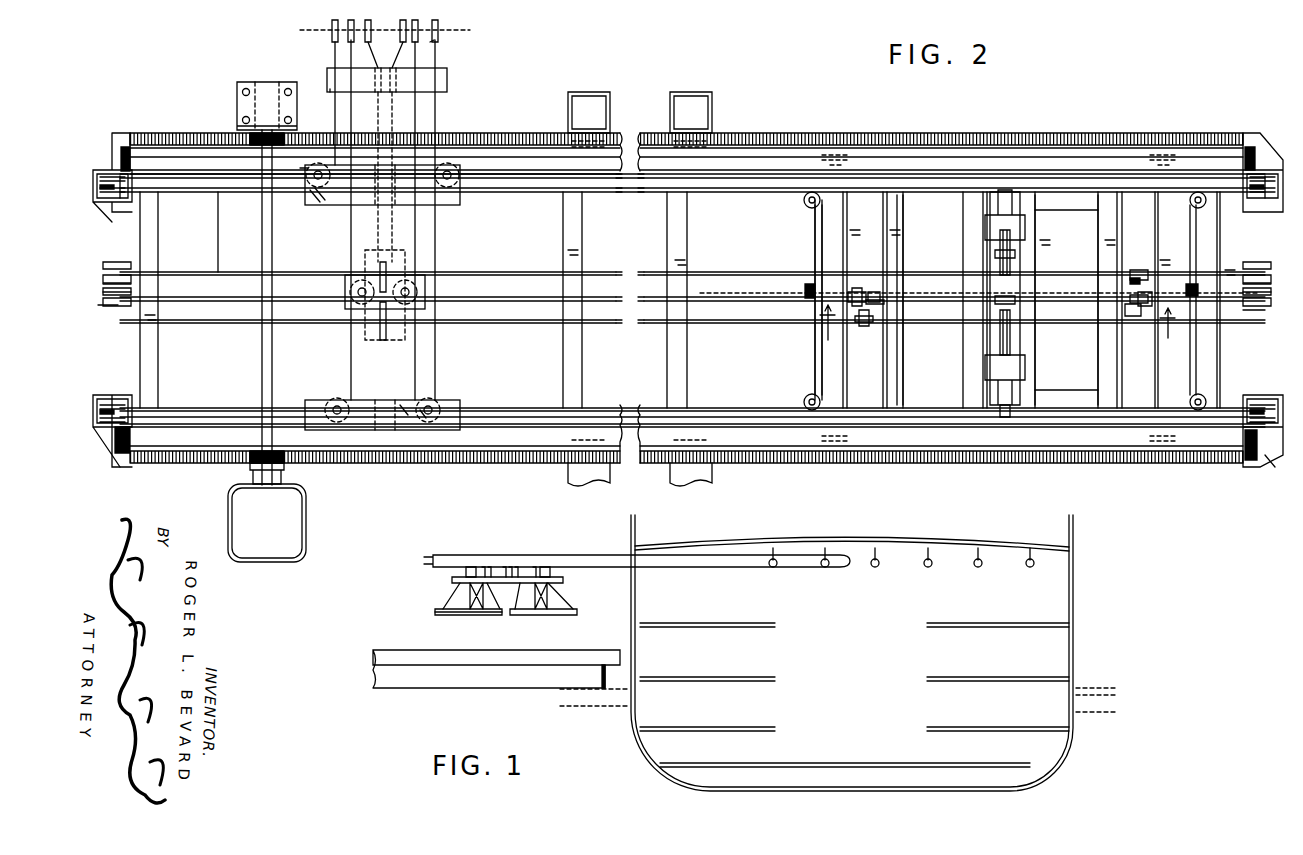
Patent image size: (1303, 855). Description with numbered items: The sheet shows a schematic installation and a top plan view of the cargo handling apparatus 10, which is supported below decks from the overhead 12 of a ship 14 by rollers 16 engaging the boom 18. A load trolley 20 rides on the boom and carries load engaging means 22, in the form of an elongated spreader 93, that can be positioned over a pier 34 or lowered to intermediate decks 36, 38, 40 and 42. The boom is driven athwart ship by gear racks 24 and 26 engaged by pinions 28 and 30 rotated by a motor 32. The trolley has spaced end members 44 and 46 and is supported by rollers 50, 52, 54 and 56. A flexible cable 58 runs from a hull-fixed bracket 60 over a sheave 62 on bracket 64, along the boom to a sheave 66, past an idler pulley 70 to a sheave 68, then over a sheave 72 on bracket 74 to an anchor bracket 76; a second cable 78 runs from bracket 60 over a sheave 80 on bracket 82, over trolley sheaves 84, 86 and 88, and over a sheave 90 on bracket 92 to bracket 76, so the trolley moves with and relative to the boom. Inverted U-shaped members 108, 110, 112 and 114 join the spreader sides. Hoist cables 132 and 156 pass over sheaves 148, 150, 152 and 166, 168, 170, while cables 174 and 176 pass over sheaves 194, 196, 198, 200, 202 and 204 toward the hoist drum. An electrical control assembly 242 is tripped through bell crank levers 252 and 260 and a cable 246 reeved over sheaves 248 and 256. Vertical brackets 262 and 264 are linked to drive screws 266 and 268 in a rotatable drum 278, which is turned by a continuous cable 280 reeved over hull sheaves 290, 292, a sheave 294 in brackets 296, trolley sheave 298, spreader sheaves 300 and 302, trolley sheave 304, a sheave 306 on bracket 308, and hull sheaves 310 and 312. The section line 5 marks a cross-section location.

In FIG. 2, the cargo handling apparatus 10 is at (928, 127).
In FIG. 1, the cargo handling apparatus 10 is at (518, 539).
In FIG. 1, the overhead 12 is at (828, 546).
In FIG. 1, the ship 14 is at (1076, 598).
In FIG. 2, the rollers 16 is at (580, 92).
In FIG. 1, the rollers 16 is at (705, 567).
In FIG. 2, the boom 18 is at (747, 162).
In FIG. 1, the boom 18 is at (582, 556).
In FIG. 2, the load trolley 20 is at (1054, 217).
In FIG. 1, the load engaging means 22 is at (429, 601).
In FIG. 2, the gear rack 24 is at (190, 134).
In FIG. 2, the gear rack 26 is at (193, 462).
In FIG. 2, the pinion 28 is at (272, 130).
In FIG. 2, the pinion 30 is at (254, 462).
In FIG. 2, the motor 32 is at (272, 562).
In FIG. 1, the pier 34 is at (403, 652).
In FIG. 1, the intermediate deck 36 is at (935, 624).
In FIG. 1, the intermediate deck 38 is at (935, 678).
In FIG. 1, the intermediate deck 40 is at (935, 728).
In FIG. 1, the intermediate deck 42 is at (842, 763).
In FIG. 2, the end member 44 is at (822, 241).
In FIG. 2, the end member 46 is at (1170, 232).
In FIG. 2, the roller 50 is at (852, 146).
In FIG. 2, the roller 52 is at (1180, 146).
In FIG. 2, the roller 54 is at (803, 447).
In FIG. 2, the roller 56 is at (1167, 452).
In FIG. 2, the flexible cable 58 is at (222, 192).
In FIG. 2, the bracket 60 is at (392, 432).
In FIG. 2, the sheave 62 is at (103, 395).
In FIG. 2, the bracket 64 is at (120, 396).
In FIG. 2, the sheave 66 is at (800, 400).
In FIG. 2, the sheave 68 is at (800, 202).
In FIG. 2, the idler pulley 70 is at (803, 290).
In FIG. 2, the sheave 72 is at (108, 195).
In FIG. 2, the bracket 74 is at (128, 204).
In FIG. 2, the bracket 76 is at (320, 196).
In FIG. 2, the second cable 78 is at (510, 190).
In FIG. 2, the sheave 80 is at (1275, 396).
In FIG. 2, the bracket 82 is at (1252, 395).
In FIG. 2, the sheave 84 is at (1204, 396).
In FIG. 2, the idler sheave 86 is at (1186, 288).
In FIG. 2, the sheave 88 is at (1205, 208).
In FIG. 2, the sheave 90 is at (1268, 204).
In FIG. 2, the bracket 92 is at (1253, 196).
In FIG. 1, the spreader 93 is at (509, 624).
In FIG. 2, the inverted U-shaped structural member 108 is at (902, 244).
In FIG. 2, the inverted U-shaped structural member 110 is at (966, 254).
In FIG. 2, the inverted U-shaped structural member 112 is at (1030, 247).
In FIG. 2, the inverted U-shaped structural member 114 is at (1100, 362).
In FIG. 2, the first hoist cable 132 is at (352, 115).
In FIG. 2, the sheave 148 is at (110, 446).
In FIG. 2, the sheave 150 is at (334, 398).
In FIG. 2, the sheave 152 is at (352, 52).
In FIG. 2, the second cable 156 is at (345, 95).
In FIG. 2, the sheave 166 is at (108, 170).
In FIG. 2, the sheave 168 is at (316, 166).
In FIG. 2, the sheave 170 is at (334, 40).
In FIG. 2, the hoist cable 174 is at (418, 124).
In FIG. 2, the hoist cable 176 is at (437, 110).
In FIG. 2, the sheave 194 is at (1276, 452).
In FIG. 2, the sheave 196 is at (1258, 174).
In FIG. 2, the sheave 198 is at (430, 398).
In FIG. 2, the sheave 200 is at (460, 168).
In FIG. 2, the sheave 202 is at (437, 45).
In FIG. 2, the sheave 204 is at (440, 38).
In FIG. 2, the electrical control assembly 242 is at (370, 345).
In FIG. 2, the cable 246 is at (746, 326).
In FIG. 2, the sheave 248 is at (1245, 332).
In FIG. 2, the bell crank lever 252 is at (867, 332).
In FIG. 2, the sheave 256 is at (108, 270).
In FIG. 2, the bell crank lever 260 is at (1142, 269).
In FIG. 2, the vertical bracket 262 is at (1012, 190).
In FIG. 2, the vertical bracket 264 is at (1005, 418).
In FIG. 2, the drive screw 266 is at (996, 234).
In FIG. 2, the drive screw 268 is at (996, 348).
In FIG. 2, the rotatable drum 278 is at (1022, 293).
In FIG. 2, the continuous cable 280 is at (224, 300).
In FIG. 2, the sheave 290 is at (360, 17).
In FIG. 2, the sheave 292 is at (343, 289).
In FIG. 2, the sheave 294 is at (95, 306).
In FIG. 2, the brackets 296 is at (135, 300).
In FIG. 2, the sheave 298 is at (860, 279).
In FIG. 2, the sheave 300 is at (897, 300).
In FIG. 2, the spreader sheave 302 is at (1135, 322).
In FIG. 2, the trolley sheave 304 is at (1156, 293).
In FIG. 2, the sheave 306 is at (1252, 290).
In FIG. 2, the bracket 308 is at (1250, 338).
In FIG. 2, the sheave 310 is at (428, 289).
In FIG. 2, the sheave 312 is at (430, 18).
In FIG. 2, the section line 5 is at (996, 330).